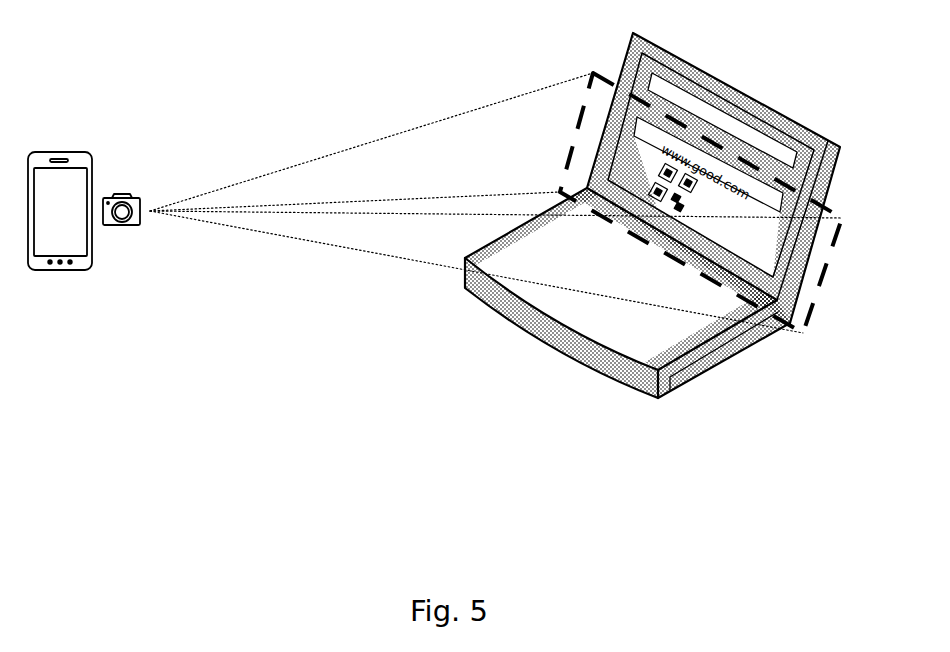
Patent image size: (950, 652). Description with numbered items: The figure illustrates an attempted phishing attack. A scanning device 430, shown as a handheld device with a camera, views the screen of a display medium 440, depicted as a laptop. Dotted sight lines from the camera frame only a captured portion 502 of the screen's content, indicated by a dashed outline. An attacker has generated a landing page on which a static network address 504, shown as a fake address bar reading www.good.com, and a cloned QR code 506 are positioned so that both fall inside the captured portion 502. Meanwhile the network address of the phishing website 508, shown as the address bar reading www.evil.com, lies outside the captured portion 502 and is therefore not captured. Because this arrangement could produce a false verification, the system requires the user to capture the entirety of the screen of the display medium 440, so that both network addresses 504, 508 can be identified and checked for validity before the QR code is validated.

The scanning device 430 is at (70, 152).
The display medium 440 is at (537, 343).
The captured portion 502 is at (837, 258).
The static network address 504 is at (840, 148).
The cloned QR code 506 is at (663, 168).
The network address of the phishing website 508 is at (720, 108).